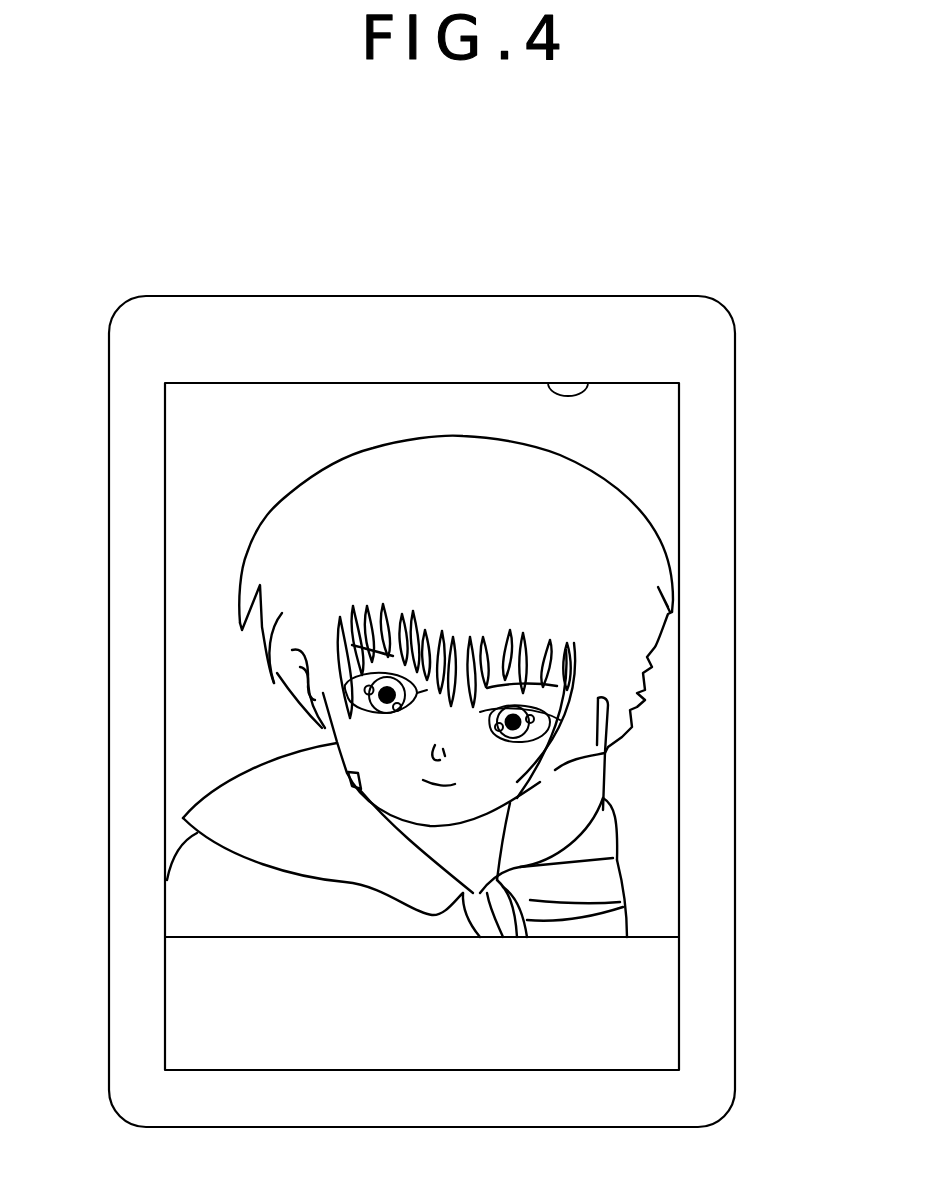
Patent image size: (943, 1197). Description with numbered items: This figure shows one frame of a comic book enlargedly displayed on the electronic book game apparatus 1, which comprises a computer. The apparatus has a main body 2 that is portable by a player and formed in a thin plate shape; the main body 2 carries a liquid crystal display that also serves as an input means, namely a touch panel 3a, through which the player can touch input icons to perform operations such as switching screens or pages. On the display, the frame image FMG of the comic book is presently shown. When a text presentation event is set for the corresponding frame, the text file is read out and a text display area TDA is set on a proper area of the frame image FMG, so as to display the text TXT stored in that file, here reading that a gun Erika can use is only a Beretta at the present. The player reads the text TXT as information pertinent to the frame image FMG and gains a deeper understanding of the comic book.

The electronic book game apparatus 1 is at (635, 143).
The main body 2 is at (733, 336).
The touch panel 3a is at (586, 383).
The frame image FMG is at (652, 451).
The text TXT is at (188, 1013).
The text display area TDA is at (658, 1015).